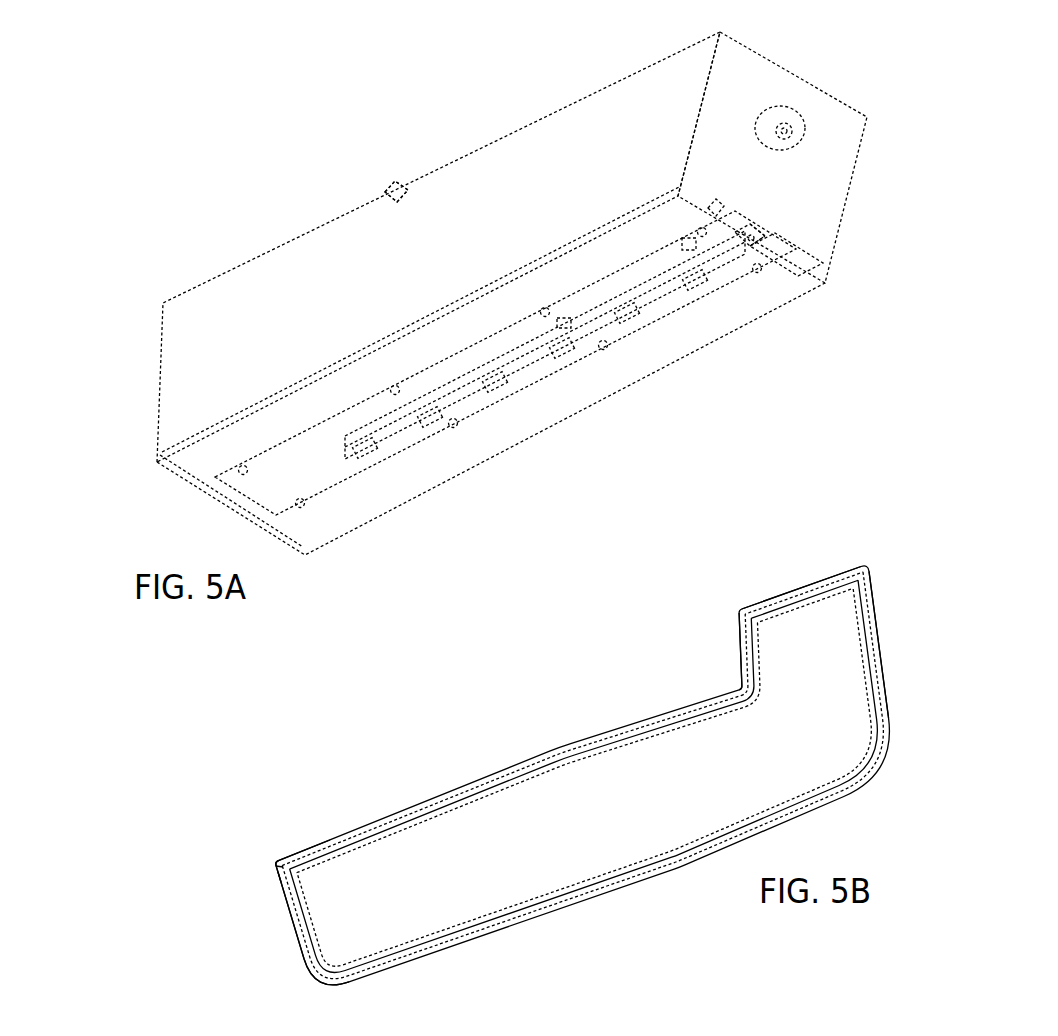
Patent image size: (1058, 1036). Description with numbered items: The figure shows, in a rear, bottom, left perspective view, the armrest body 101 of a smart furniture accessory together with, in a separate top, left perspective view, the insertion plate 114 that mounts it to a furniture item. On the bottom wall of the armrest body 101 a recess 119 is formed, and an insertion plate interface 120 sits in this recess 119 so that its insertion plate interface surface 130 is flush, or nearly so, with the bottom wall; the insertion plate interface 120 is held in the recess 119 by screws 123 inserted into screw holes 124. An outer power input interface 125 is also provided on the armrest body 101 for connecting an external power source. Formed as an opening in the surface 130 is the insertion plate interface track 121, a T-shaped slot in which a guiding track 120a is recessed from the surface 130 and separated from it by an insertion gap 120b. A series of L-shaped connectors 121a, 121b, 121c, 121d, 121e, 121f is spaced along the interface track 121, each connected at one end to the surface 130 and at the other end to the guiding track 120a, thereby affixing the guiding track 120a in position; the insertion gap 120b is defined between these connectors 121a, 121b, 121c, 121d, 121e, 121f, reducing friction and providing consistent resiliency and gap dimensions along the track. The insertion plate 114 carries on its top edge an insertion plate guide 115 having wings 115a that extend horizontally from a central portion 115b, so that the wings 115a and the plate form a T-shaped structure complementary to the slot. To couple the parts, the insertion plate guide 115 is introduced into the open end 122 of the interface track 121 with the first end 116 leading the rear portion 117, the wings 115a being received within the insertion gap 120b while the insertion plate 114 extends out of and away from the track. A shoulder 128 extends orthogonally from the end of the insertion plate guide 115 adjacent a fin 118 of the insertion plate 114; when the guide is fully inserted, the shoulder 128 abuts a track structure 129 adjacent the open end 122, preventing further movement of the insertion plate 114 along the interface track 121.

In FIG. 5A, the armrest body 101 is at (270, 333).
In FIG. 5B, the insertion plate 114 is at (440, 833).
In FIG. 5B, the insertion plate guide 115 is at (278, 862).
In FIG. 5B, the wings 115a is at (272, 865).
In FIG. 5B, the central portion 115b is at (277, 869).
In FIG. 5B, the first end 116 is at (297, 950).
In FIG. 5B, the rear portion 117 is at (885, 683).
In FIG. 5B, the fin 118 is at (828, 578).
In FIG. 5A, the recess 119 is at (787, 253).
In FIG. 5A, the insertion plate interface 120 is at (673, 252).
In FIG. 5A, the guiding track 120a is at (749, 236).
In FIG. 5A, the insertion gap 120b is at (750, 238).
In FIG. 5A, the insertion plate interface track 121 is at (447, 388).
In FIG. 5A, the L-shaped connector 121a is at (695, 281).
In FIG. 5A, the L-shaped connector 121b is at (627, 313).
In FIG. 5A, the L-shaped connector 121c is at (562, 348).
In FIG. 5A, the L-shaped connector 121d is at (495, 382).
In FIG. 5A, the L-shaped connector 121e is at (430, 417).
In FIG. 5A, the L-shaped connector 121f is at (365, 448).
In FIG. 5A, the open end 122 is at (751, 240).
In FIG. 5A, the screws 123 is at (570, 312).
In FIG. 5A, the screw holes 124 is at (548, 310).
In FIG. 5A, the outer power input interface 125 is at (787, 143).
In FIG. 5B, the shoulder 128 is at (740, 695).
In FIG. 5A, the track structure 129 is at (738, 236).
In FIG. 5A, the insertion plate interface surface 130 is at (688, 247).